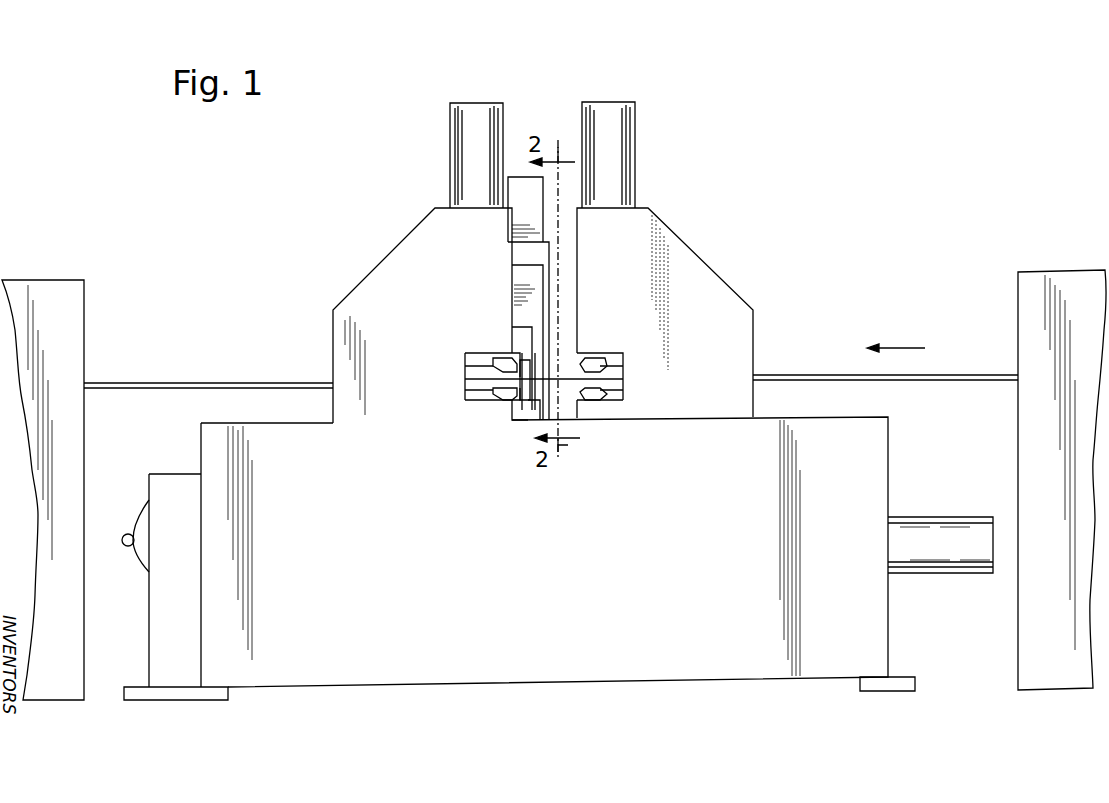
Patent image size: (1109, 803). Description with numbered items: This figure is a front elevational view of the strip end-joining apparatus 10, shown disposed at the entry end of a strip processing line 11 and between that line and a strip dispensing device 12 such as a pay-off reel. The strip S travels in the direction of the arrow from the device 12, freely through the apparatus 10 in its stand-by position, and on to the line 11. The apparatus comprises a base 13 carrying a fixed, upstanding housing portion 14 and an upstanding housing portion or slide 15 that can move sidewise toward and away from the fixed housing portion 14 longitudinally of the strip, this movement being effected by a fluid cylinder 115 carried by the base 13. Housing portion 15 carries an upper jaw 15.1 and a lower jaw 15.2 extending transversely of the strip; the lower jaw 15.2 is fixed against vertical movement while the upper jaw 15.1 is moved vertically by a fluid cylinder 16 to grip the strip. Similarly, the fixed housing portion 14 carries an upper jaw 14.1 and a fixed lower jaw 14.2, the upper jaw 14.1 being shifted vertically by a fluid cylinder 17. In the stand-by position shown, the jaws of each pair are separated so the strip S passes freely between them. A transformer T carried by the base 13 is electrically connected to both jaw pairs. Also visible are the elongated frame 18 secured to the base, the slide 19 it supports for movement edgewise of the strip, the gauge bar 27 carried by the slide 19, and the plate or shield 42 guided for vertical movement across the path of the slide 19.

The apparatus 10 is at (712, 161).
The strip processing line 11 is at (68, 247).
The strip dispensing device 12 is at (1066, 230).
The base 13 is at (519, 558).
The fixed upstanding housing portion 14 is at (384, 255).
The upper jaw 14.1 is at (500, 362).
The lower jaw 14.2 is at (500, 397).
The upstanding housing portion or slide 15 is at (718, 272).
The upper jaw 15.1 is at (585, 364).
The lower jaw 15.2 is at (585, 400).
The fluid cylinder 16 is at (625, 115).
The fluid cylinder 17 is at (470, 112).
The elongated frame 18 is at (515, 230).
The slide 19 is at (510, 339).
The gauge bar 27 is at (537, 406).
The plate or shield 42 is at (528, 203).
The fluid cylinder 115 is at (923, 566).
The strip S is at (822, 376).
The transformer T is at (172, 474).